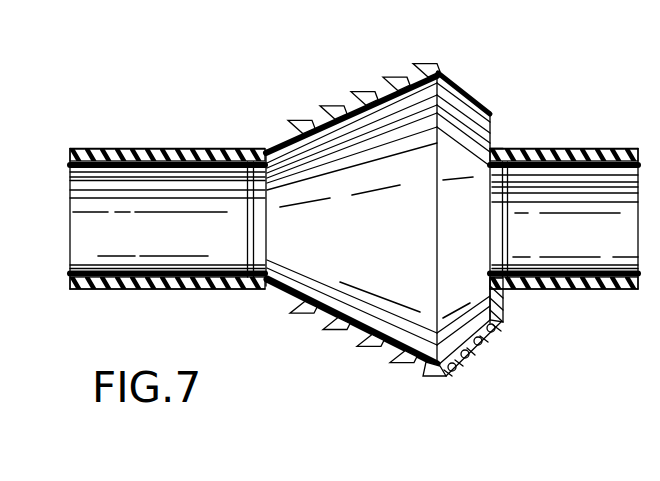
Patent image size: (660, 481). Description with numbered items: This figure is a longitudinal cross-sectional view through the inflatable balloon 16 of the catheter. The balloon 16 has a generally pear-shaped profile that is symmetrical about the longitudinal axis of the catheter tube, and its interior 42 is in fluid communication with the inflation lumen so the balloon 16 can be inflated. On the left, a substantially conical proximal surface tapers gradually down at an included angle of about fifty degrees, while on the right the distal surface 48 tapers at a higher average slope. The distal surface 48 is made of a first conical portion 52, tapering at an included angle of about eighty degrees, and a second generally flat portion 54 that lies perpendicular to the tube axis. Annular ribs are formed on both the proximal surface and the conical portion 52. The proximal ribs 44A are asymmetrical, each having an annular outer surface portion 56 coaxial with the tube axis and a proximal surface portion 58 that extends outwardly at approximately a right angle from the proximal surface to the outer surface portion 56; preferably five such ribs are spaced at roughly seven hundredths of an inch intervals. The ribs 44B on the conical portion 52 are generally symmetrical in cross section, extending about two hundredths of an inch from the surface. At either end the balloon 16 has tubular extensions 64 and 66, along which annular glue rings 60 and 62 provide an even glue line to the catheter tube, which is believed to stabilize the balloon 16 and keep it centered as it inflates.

The balloon 16 is at (470, 68).
The interior 42 is at (337, 163).
The proximal ribs 44A is at (392, 76).
The annular ribs 44B is at (441, 66).
The distal surface 48 is at (492, 108).
The conical portion 52 is at (463, 363).
The flat portion 54 is at (503, 313).
The annular outer surface portions 56 is at (394, 368).
The proximal surface portions 58 is at (316, 329).
The glue ring 60 is at (245, 255).
The glue ring 62 is at (508, 197).
The tubular extension 64 is at (141, 148).
The tubular extension 66 is at (596, 150).